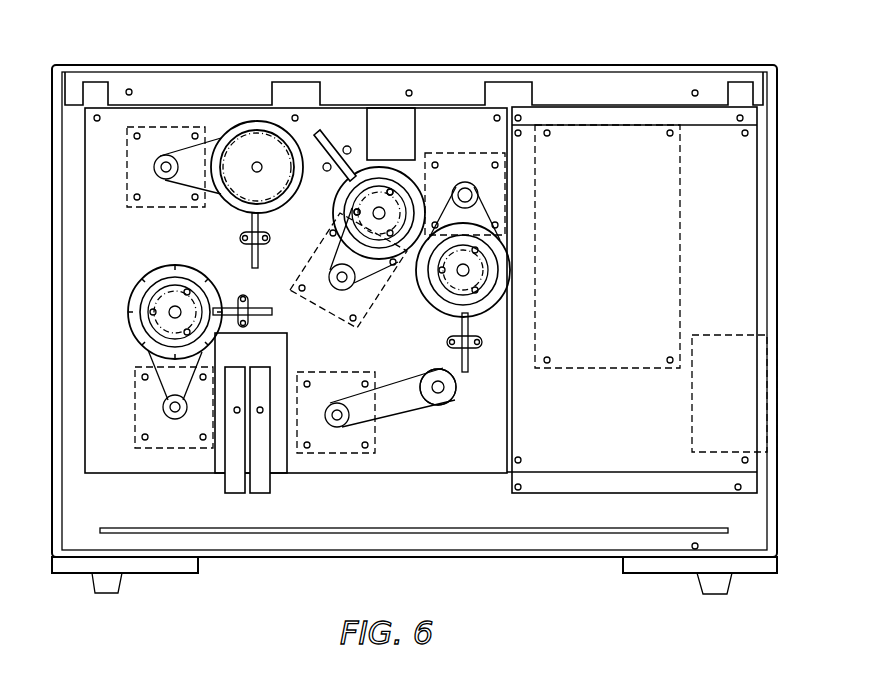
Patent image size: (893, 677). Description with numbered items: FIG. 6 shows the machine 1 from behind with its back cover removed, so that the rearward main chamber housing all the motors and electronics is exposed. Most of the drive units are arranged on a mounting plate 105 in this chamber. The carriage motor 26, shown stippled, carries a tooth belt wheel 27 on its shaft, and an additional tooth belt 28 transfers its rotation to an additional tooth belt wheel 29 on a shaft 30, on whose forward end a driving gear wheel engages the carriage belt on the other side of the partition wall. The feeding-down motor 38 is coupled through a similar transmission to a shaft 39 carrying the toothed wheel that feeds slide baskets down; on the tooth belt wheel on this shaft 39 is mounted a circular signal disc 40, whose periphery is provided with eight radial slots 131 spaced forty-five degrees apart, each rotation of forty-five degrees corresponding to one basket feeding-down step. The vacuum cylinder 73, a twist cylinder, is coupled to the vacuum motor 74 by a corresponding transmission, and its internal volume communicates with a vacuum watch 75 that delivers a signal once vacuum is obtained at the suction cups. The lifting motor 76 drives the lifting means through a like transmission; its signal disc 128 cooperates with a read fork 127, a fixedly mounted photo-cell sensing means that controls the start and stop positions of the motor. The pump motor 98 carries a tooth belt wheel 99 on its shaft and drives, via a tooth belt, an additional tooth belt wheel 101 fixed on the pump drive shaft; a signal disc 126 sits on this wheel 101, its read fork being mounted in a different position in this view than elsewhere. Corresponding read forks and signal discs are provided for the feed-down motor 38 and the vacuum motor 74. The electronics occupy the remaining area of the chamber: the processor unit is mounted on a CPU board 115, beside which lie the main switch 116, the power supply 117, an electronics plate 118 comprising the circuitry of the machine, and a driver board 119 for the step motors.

The machine 1 is at (606, 64).
The carriage motor 26 is at (320, 456).
The tooth belt wheel 27 is at (343, 430).
The additional tooth belt 28 is at (406, 420).
The additional tooth belt wheel 29 is at (450, 402).
The shaft 30 is at (445, 387).
The feeding-down motor 38 is at (172, 447).
The shaft 39 is at (172, 314).
The signal disc 40 is at (136, 286).
The vacuum cylinder 73 is at (250, 150).
The vacuum motor 74 is at (148, 205).
The vacuum watch 75 is at (387, 120).
The lifting motor 76 is at (452, 168).
The pump motor 98 is at (330, 298).
The tooth belt wheel 99 is at (348, 291).
The additional tooth belt wheel 101 is at (387, 232).
The mounting plate 105 is at (463, 470).
The CPU board 115 is at (572, 458).
The main switch 116 is at (735, 406).
The power supply 117 is at (655, 252).
The electronics plate 118 is at (650, 484).
The driver board 119 is at (600, 536).
The signal disc 126 is at (336, 210).
The read fork 127 is at (470, 366).
The signal disc 128 is at (487, 303).
The radial slots 131 is at (204, 270).